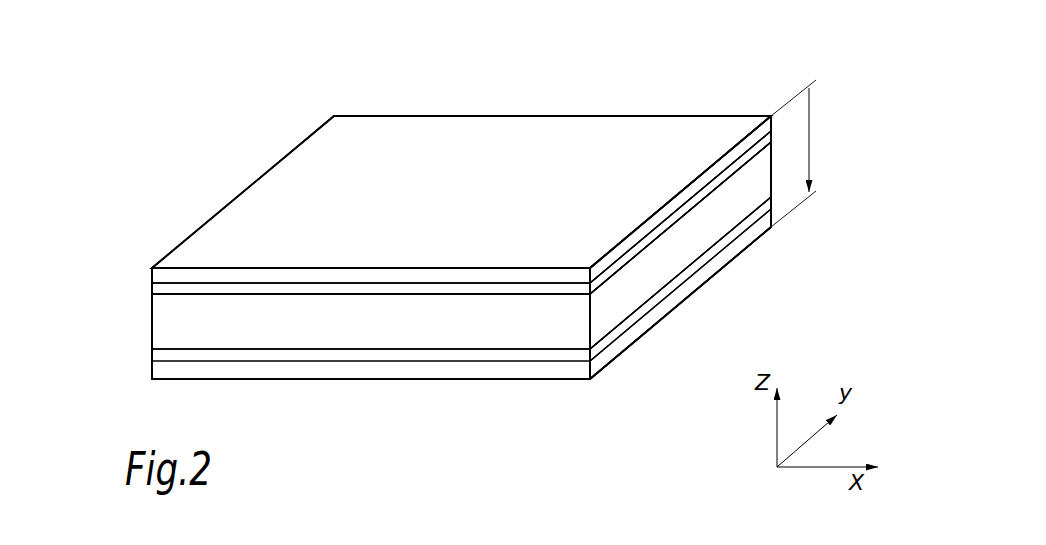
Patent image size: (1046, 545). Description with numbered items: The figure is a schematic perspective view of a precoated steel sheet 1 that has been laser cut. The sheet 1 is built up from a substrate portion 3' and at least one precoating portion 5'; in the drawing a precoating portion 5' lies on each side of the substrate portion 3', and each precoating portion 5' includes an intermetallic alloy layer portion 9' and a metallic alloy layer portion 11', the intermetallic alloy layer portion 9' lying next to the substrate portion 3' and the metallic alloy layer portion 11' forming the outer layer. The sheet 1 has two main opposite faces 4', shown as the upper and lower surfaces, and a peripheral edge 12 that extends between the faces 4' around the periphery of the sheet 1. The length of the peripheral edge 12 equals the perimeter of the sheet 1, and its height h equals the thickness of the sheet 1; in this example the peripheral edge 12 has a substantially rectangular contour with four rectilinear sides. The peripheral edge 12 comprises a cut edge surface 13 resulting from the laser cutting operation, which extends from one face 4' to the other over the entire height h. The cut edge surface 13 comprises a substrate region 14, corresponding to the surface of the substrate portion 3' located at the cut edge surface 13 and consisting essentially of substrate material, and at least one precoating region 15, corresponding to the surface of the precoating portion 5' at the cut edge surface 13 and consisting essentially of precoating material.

The precoated steel sheet 1 is at (292, 110).
The main opposite faces 4' is at (461, 237).
The precoating portion 5' is at (404, 248).
The metallic alloy layer portion 11' is at (418, 199).
The intermetallic alloy layer portion 9' is at (419, 214).
The substrate portion 3' is at (426, 245).
The peripheral edge 12 is at (450, 330).
The cut edge surface 13 is at (782, 170).
The substrate region 14 is at (733, 198).
The precoating region 15 is at (652, 221).